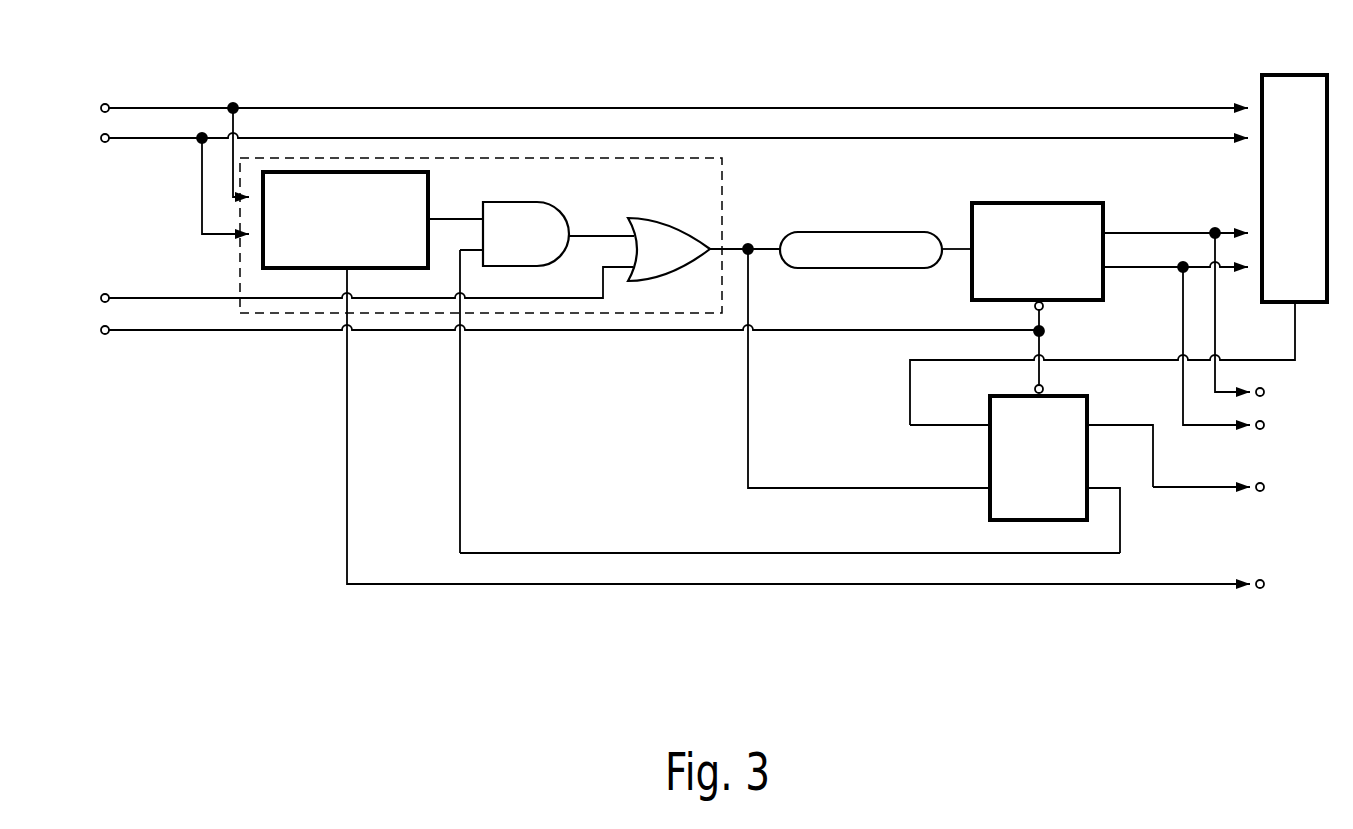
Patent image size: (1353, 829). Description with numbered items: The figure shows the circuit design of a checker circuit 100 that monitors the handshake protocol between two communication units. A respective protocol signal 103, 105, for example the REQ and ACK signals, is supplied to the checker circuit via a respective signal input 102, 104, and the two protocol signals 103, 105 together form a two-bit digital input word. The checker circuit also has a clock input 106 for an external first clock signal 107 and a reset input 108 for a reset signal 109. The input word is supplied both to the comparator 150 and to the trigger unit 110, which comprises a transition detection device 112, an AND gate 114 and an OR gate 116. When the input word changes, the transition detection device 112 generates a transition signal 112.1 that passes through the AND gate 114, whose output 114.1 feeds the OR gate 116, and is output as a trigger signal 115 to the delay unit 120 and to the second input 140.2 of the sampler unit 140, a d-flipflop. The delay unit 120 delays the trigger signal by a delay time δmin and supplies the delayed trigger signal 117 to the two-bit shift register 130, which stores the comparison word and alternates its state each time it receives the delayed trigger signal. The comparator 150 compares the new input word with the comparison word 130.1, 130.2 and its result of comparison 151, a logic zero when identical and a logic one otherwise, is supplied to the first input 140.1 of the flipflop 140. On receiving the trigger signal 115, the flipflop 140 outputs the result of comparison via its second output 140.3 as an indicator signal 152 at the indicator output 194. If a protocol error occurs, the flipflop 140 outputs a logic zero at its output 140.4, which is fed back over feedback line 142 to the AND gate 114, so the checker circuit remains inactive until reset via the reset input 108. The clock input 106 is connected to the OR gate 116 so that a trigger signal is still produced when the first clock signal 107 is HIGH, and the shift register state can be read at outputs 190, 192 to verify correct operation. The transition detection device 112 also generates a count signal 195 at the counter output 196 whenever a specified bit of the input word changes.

The checker circuit 100 is at (695, 612).
The signal input 102 is at (101, 106).
The protocol signal 103 is at (350, 106).
The signal input 104 is at (102, 142).
The protocol signal 105 is at (420, 136).
The clock input 106 is at (100, 298).
The first clock signal 107 is at (195, 298).
The reset input 108 is at (100, 330).
The reset signal 109 is at (838, 328).
The trigger unit 110 is at (725, 160).
The transition detection device 112 is at (428, 178).
The transition signal 112.1 is at (442, 217).
The AND gate 114 is at (568, 190).
The AND gate output signal 114.1 is at (582, 233).
The trigger signal 115 is at (746, 244).
The OR gate 116 is at (665, 221).
The delayed trigger signal 117 is at (950, 247).
The delay unit 120 is at (832, 231).
The shift register 130 is at (1037, 202).
The comparison word bit 130.1 is at (1118, 232).
The comparison word bit 130.2 is at (1140, 268).
The sampler unit 140 is at (988, 456).
The first input 140.1 is at (988, 418).
The second input 140.2 is at (988, 492).
The second output 140.3 is at (1087, 418).
The second output 140.4 is at (1112, 470).
The feedback line 142 is at (583, 552).
The comparator 150 is at (1287, 74).
The result of comparison 151 is at (908, 394).
The indicator signal 152 is at (1192, 489).
The output 190 is at (1265, 392).
The output 192 is at (1265, 425).
The indicator output 194 is at (1265, 487).
The count signal 195 is at (455, 586).
The counter output 196 is at (1265, 584).